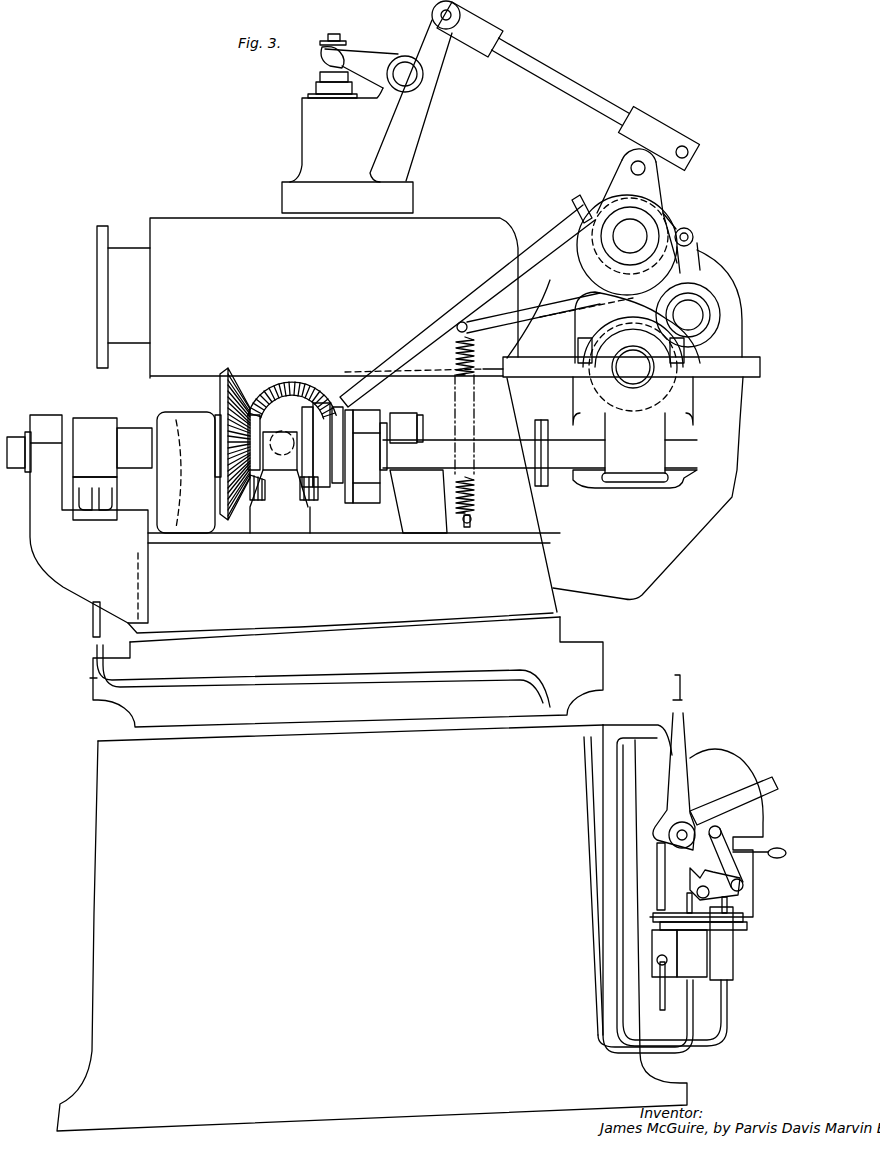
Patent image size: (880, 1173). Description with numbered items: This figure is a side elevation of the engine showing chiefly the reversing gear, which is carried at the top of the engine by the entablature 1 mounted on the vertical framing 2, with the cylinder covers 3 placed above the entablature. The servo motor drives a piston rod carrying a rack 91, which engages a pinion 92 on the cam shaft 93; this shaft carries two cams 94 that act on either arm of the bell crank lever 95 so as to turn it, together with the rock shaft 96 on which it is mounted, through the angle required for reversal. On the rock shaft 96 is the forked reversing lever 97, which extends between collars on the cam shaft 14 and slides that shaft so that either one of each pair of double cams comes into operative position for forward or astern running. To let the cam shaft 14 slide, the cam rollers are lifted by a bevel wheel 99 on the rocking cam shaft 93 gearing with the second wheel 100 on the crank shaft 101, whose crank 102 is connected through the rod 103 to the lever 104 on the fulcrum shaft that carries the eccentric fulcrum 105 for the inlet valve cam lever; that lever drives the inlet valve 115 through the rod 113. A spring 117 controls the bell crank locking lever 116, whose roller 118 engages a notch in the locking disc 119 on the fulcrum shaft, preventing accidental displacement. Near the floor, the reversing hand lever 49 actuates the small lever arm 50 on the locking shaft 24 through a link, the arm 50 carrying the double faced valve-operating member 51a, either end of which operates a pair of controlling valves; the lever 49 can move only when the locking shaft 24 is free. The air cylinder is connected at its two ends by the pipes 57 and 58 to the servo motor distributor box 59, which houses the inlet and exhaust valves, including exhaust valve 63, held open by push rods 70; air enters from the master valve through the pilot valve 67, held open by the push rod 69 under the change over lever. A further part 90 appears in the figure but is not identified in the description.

The entablature 1 is at (344, 505).
The vertical framing 2 is at (372, 928).
The cylinder covers 3 is at (307, 298).
The cam shaft 14 is at (633, 367).
The locking shaft 24 is at (700, 888).
The reversing hand lever 49 is at (742, 790).
The small lever arm 50 is at (744, 886).
The double faced valve-operating member 51a is at (735, 893).
The pipe 57 is at (584, 774).
The pipe 58 is at (690, 995).
The servo motor distributor box 59 is at (700, 950).
The exhaust valve 63 is at (683, 731).
The pilot valve 67 is at (687, 908).
The push rod 69 is at (657, 853).
The push rods 70 is at (660, 917).
The shaft 90 is at (631, 236).
The rack 91 is at (97, 513).
The pinion 92 is at (90, 440).
The cam shaft 93 is at (125, 432).
The cams 94 is at (378, 422).
The bell crank lever 95 is at (340, 483).
The rock shaft 96 is at (478, 455).
The reversing lever 97 is at (631, 390).
The bevel wheel 99 is at (237, 388).
The second wheel 100 is at (282, 385).
The crank shaft 101 is at (290, 410).
The crank 102 is at (383, 453).
The rod 103 is at (512, 272).
The lever 104 is at (630, 161).
The eccentric fulcrum 105 is at (598, 258).
The rod 113 is at (548, 78).
The inlet valve 115 is at (352, 123).
The bell crank locking lever 116 is at (495, 305).
The spring 117 is at (455, 398).
The roller 118 is at (695, 236).
The locking disc 119 is at (673, 222).